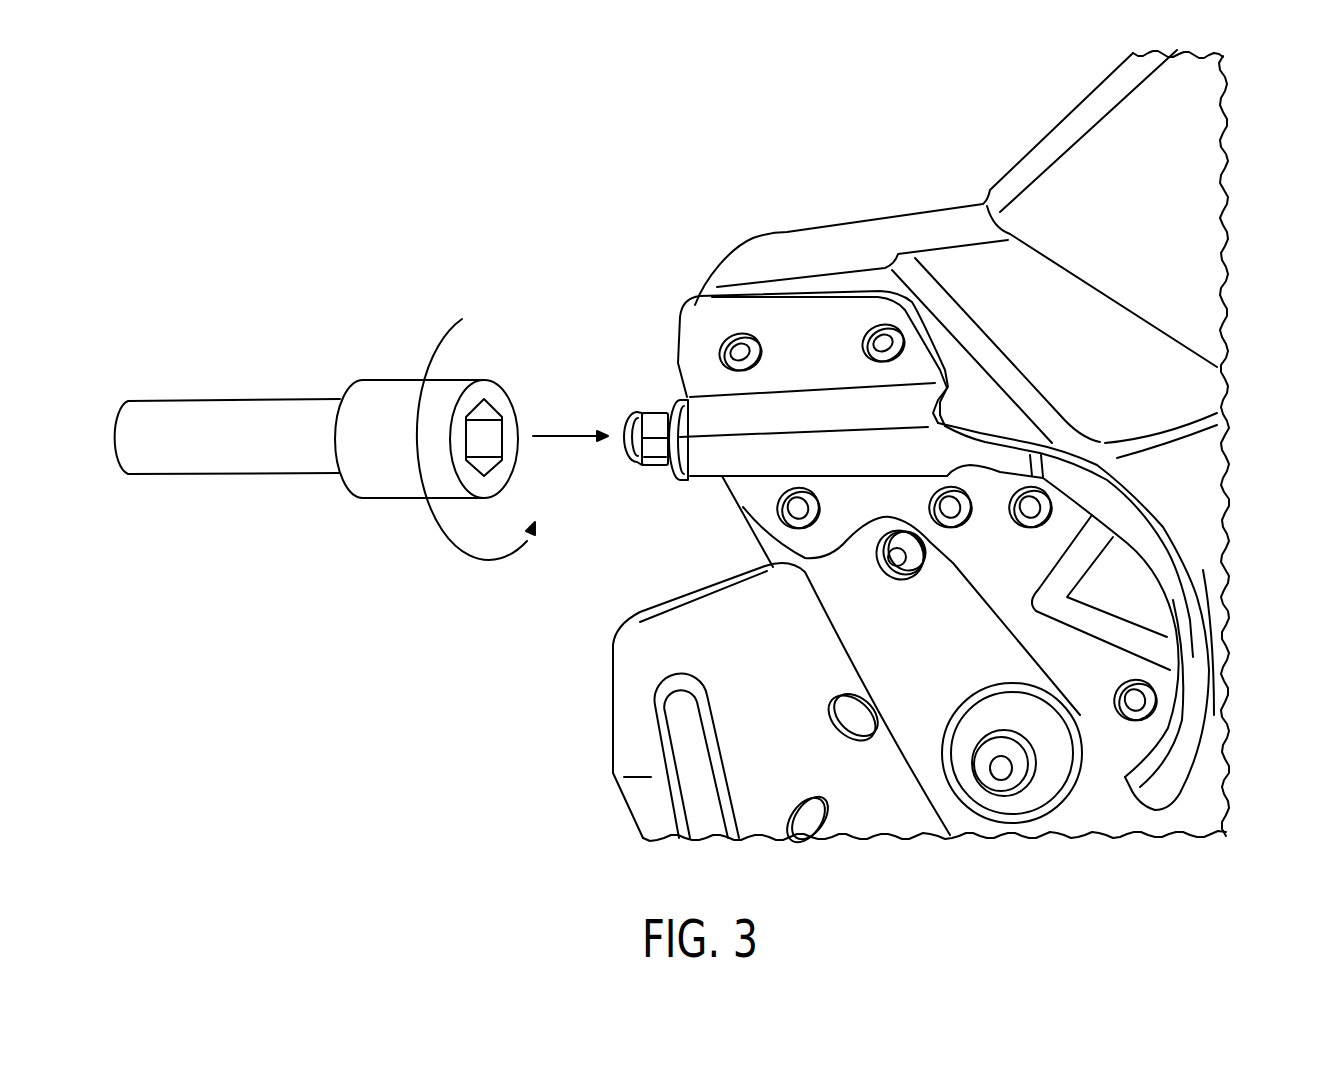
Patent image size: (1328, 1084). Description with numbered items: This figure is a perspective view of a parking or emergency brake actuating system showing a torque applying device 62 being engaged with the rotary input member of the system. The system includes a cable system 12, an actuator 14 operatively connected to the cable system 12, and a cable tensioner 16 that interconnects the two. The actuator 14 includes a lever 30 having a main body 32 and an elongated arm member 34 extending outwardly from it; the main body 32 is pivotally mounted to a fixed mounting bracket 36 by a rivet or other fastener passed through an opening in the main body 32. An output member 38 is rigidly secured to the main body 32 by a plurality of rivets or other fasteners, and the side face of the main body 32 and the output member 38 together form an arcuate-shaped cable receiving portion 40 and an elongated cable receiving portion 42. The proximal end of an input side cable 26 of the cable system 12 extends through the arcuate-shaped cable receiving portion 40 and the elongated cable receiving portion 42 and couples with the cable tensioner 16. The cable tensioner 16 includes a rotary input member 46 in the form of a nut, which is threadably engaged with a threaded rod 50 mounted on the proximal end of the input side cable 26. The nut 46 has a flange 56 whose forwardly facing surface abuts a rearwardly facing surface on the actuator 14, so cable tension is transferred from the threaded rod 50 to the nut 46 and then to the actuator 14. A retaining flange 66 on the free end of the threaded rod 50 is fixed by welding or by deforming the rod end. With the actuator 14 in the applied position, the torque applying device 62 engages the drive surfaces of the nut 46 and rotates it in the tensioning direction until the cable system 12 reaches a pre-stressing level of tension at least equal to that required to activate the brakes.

The cable system 12 is at (1215, 613).
The actuator 14 is at (706, 236).
The cable tensioner 16 is at (645, 495).
The input side cable 26 is at (1210, 588).
The lever 30 is at (932, 210).
The main body 32 is at (867, 242).
The elongated arm member 34 is at (1080, 155).
The fixed mounting bracket 36 is at (690, 752).
The output member 38 is at (807, 350).
The arcuate-shaped cable receiving portion 40 is at (1103, 513).
The elongated cable receiving portion 42 is at (778, 455).
The rotary input member 46 is at (658, 413).
The threaded rod 50 is at (625, 453).
The flange 56 is at (672, 478).
The torque applying device 62 is at (270, 418).
The flange 66 is at (627, 417).